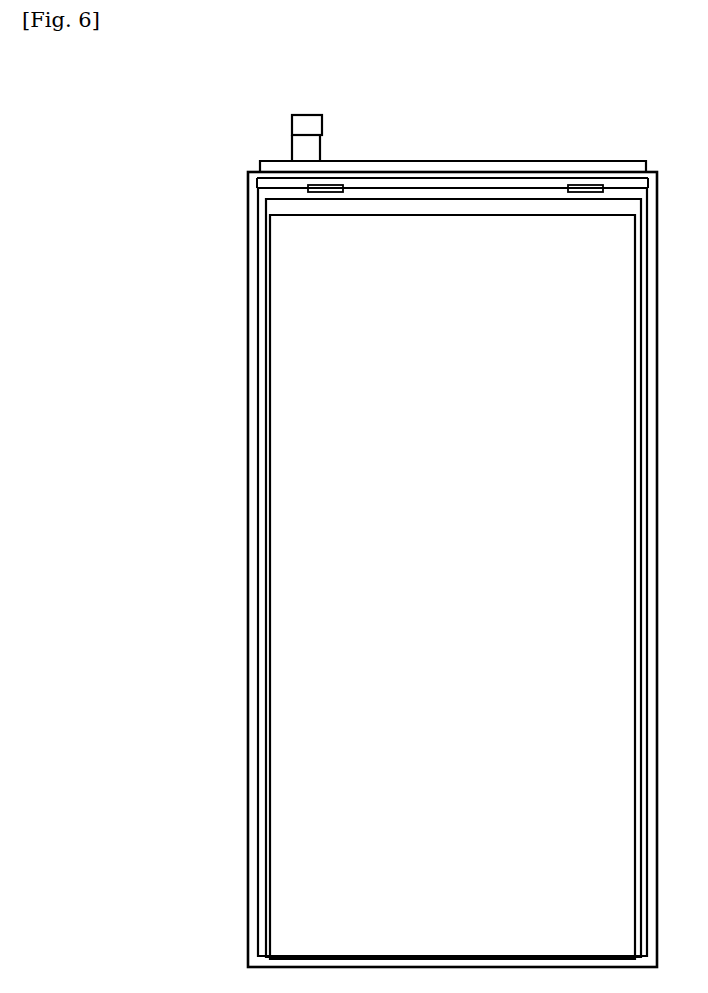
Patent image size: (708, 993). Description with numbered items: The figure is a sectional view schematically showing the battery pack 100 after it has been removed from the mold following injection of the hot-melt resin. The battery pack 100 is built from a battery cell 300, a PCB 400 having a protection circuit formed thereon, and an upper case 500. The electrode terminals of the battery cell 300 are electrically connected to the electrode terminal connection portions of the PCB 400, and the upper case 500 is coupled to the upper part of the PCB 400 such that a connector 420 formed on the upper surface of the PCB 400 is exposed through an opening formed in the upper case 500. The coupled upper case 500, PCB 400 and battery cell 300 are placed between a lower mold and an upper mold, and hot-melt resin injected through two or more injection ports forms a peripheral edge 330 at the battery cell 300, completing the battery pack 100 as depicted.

The battery pack 100 is at (110, 128).
The battery cell 300 is at (283, 712).
The peripheral edge 330 is at (252, 434).
The PCB 400 is at (356, 178).
The connector 420 is at (303, 140).
The upper case 500 is at (257, 170).